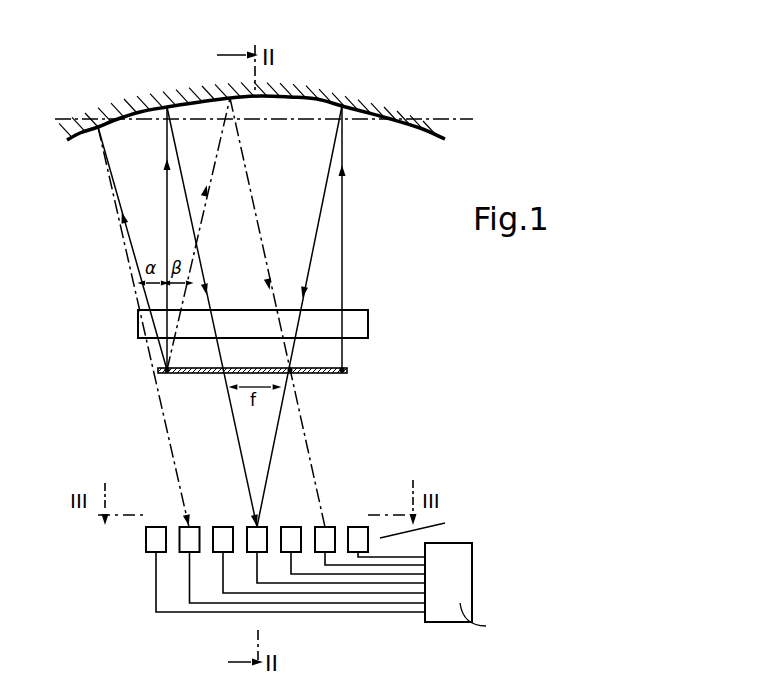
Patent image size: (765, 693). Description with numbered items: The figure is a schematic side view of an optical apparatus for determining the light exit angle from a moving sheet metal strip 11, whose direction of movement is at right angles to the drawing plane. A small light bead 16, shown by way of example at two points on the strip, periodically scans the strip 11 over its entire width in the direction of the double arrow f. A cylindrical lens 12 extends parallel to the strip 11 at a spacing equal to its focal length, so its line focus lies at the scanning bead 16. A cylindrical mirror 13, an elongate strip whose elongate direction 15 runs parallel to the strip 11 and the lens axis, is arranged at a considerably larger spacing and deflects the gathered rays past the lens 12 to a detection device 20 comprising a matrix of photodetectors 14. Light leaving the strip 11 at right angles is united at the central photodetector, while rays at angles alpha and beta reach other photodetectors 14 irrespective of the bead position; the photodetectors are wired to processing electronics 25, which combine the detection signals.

The sheet metal strip 11 is at (327, 375).
The cylindrical lens 12 is at (368, 318).
The cylindrical mirror 13 is at (317, 98).
The photodetectors 14 is at (146, 549).
The elongate direction 15 is at (449, 118).
The light bead 16 is at (165, 368).
The detection device 20 is at (307, 543).
The processing electronics 25 is at (472, 568).